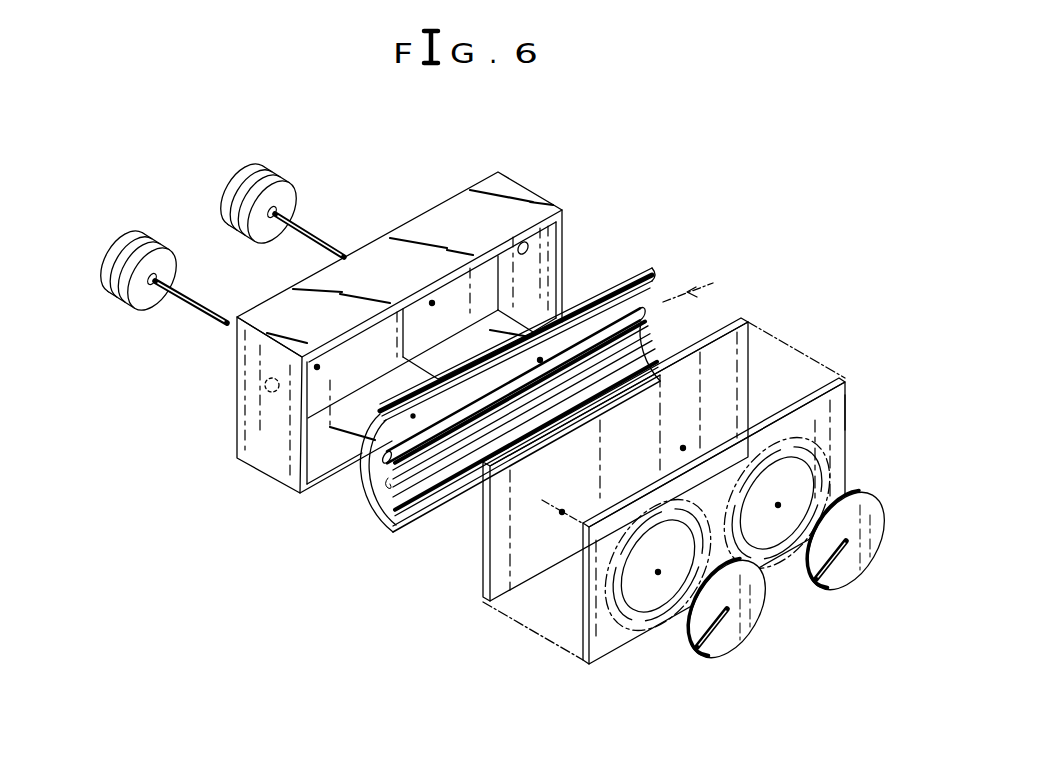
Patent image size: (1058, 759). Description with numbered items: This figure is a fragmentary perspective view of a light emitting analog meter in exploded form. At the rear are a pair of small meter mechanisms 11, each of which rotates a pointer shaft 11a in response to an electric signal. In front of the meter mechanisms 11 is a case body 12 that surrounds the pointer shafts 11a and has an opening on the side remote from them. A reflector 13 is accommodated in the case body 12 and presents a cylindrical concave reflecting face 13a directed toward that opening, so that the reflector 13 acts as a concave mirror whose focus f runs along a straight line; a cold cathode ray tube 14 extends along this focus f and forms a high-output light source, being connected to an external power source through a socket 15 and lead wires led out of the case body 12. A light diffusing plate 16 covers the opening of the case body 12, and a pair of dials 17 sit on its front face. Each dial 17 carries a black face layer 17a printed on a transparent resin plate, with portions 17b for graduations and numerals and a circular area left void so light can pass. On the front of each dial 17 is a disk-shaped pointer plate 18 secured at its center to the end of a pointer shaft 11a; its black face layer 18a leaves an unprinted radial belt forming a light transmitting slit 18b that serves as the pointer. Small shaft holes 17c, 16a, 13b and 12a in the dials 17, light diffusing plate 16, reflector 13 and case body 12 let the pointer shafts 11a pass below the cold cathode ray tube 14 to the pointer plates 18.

The meter mechanism 11 is at (275, 180).
The pointer shaft 11a is at (322, 241).
The case body 12 is at (513, 192).
The shaft hole 12a is at (432, 303).
The reflector 13 is at (633, 278).
The cylindrical concave reflecting face 13a is at (383, 512).
The shaft hole 13b is at (540, 360).
The cold cathode ray tube 14 is at (430, 487).
The socket 15 is at (529, 252).
The light diffusing plate 16 is at (737, 338).
The shaft hole 16a is at (683, 448).
The dial 17 is at (845, 378).
The black face layer 17a is at (830, 403).
The graduation and numeral portions 17b is at (838, 450).
The shaft hole 17c is at (778, 505).
The pointer plate 18 is at (698, 650).
The black face layer 18a is at (745, 622).
The light transmitting slit 18b is at (723, 652).
The focus f is at (716, 296).